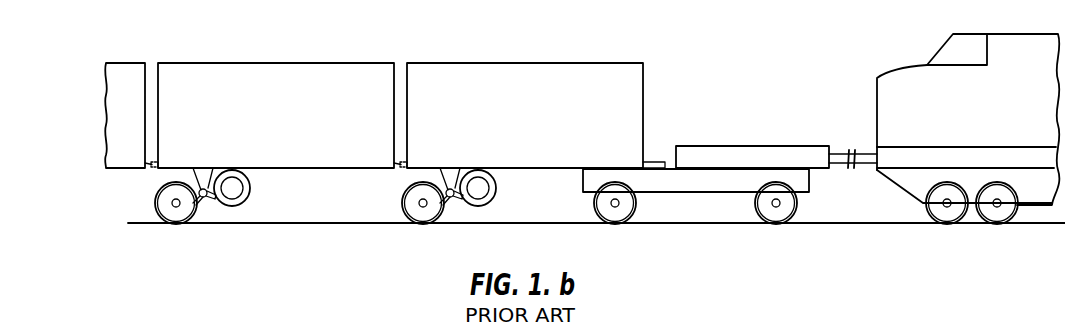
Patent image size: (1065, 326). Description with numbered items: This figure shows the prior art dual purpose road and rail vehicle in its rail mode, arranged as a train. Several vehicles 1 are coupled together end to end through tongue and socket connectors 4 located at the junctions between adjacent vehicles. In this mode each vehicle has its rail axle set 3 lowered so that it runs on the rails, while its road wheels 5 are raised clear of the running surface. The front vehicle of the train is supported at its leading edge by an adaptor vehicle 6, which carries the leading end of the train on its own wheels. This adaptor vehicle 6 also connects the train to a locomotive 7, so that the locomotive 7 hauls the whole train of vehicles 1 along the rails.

The vehicle 1 is at (342, 78).
The rail axle set 3 is at (182, 214).
The tongue and socket connector 4 is at (150, 167).
The road wheel 5 is at (250, 188).
The adaptor vehicle 6 is at (695, 183).
The locomotive 7 is at (900, 99).